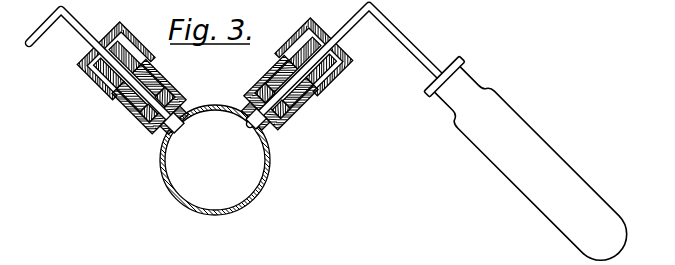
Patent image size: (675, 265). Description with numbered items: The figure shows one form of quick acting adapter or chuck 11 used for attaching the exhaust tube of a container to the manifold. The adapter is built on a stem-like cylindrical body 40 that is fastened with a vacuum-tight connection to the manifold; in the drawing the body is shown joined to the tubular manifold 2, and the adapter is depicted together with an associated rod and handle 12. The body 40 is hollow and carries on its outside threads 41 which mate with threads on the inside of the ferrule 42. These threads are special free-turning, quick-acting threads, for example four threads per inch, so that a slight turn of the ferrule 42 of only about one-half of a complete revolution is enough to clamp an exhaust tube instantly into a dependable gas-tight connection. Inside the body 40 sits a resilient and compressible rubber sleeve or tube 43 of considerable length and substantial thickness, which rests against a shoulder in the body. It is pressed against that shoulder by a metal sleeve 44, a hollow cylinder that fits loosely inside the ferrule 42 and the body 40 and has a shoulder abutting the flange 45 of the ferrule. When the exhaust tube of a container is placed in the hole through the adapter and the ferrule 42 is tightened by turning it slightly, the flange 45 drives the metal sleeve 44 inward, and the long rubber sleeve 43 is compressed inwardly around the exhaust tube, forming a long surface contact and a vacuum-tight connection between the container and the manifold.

The tube 2 is at (172, 193).
The adapter or chuck 11 is at (100, 88).
The handle 12 is at (530, 128).
The cylindrical body 40 is at (155, 128).
The threads 41 is at (135, 118).
The ferrule 42 is at (139, 40).
The rubber sleeve or tube 43 is at (166, 84).
The metal sleeve 44 is at (103, 77).
The flange 45 is at (100, 66).